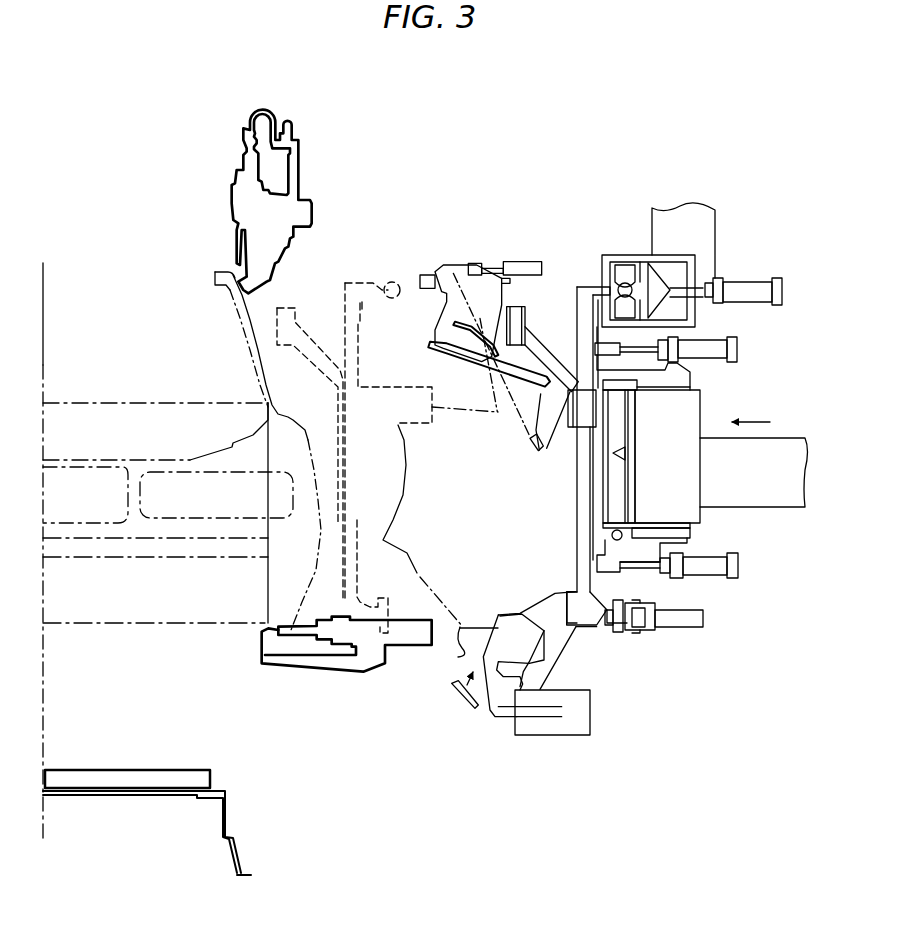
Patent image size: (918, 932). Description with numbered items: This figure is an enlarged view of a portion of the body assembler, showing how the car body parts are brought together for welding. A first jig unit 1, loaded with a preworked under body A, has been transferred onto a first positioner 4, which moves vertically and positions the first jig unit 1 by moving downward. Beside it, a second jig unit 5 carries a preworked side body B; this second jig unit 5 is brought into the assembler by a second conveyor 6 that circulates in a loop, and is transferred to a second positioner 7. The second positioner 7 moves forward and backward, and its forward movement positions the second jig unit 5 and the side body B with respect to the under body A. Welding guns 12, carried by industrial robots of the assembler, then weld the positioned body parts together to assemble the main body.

The first jig unit 1 is at (215, 780).
The first positioner 4 is at (232, 820).
The second jig unit 5 is at (362, 283).
The second conveyor 6 is at (620, 253).
The second positioner 7 is at (744, 512).
The welding gun 12 is at (303, 162).
The under body A is at (152, 623).
The side body B is at (247, 340).